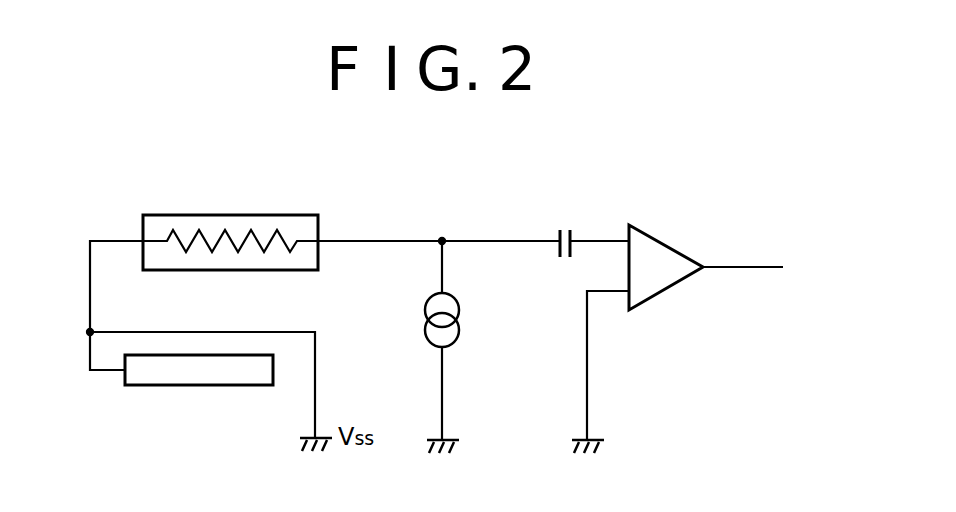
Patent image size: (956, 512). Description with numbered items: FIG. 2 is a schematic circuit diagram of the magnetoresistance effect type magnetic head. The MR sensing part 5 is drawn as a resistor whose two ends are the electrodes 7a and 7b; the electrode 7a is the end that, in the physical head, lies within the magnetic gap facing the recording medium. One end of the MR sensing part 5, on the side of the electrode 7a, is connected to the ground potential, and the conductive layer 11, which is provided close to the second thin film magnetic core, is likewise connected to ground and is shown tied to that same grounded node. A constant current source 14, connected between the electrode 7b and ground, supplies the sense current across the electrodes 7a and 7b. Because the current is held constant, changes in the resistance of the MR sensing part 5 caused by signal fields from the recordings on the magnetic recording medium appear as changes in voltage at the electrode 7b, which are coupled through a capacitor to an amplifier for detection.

The MR sensing part 5 is at (200, 215).
The electrode 7a is at (108, 240).
The electrode 7b is at (372, 240).
The conductive layer 11 is at (157, 386).
The constant current source 14 is at (460, 333).